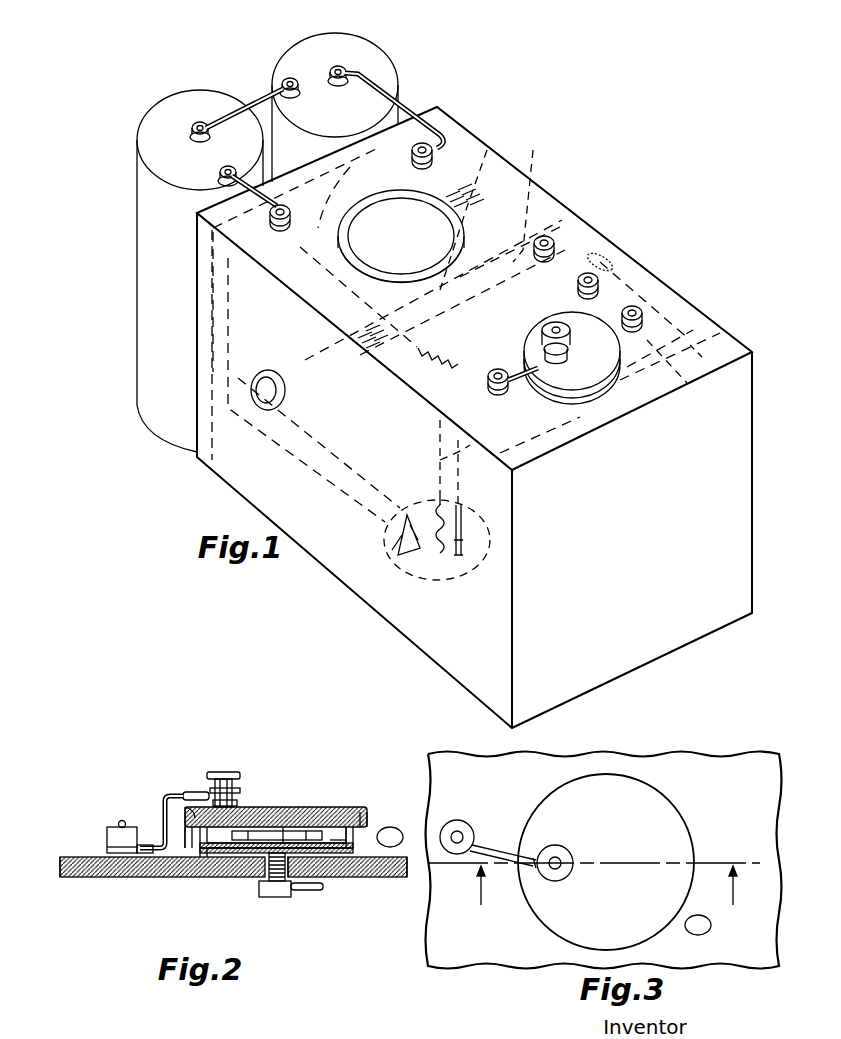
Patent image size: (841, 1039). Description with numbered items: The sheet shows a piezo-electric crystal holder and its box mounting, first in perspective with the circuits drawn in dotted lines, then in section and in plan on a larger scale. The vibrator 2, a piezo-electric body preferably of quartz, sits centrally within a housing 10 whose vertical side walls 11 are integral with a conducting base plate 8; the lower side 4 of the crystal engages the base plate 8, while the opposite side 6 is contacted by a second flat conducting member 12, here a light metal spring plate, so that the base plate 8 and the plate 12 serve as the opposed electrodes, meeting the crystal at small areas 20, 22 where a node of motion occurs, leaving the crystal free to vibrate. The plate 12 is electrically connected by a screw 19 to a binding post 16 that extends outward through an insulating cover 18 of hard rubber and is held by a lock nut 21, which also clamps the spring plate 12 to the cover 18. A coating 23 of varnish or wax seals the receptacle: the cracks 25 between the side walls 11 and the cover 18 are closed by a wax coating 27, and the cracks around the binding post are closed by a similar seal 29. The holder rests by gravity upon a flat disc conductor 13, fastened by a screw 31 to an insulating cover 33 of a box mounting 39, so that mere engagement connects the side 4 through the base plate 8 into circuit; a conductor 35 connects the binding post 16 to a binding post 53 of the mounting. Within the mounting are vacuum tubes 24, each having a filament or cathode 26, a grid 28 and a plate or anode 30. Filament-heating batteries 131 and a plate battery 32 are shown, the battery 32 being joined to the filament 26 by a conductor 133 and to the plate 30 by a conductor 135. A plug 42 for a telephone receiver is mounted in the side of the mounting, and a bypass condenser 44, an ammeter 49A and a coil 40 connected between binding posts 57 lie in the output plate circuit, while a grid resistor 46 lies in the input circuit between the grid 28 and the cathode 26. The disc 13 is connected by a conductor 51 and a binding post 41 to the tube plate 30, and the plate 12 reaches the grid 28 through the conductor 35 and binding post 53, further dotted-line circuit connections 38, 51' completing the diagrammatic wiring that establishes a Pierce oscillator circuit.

In FIG. 2, the piezo-electric body 2 is at (332, 845).
In FIG. 3, the piezo-electric body 2 is at (594, 898).
In FIG. 2, the side of crystal 4 is at (250, 815).
In FIG. 2, the opposite side of crystal 6 is at (365, 812).
In FIG. 2, the base plate 8 is at (362, 825).
In FIG. 2, the housing 10 is at (390, 837).
In FIG. 3, the housing 10 is at (698, 925).
In FIG. 2, the side walls 11 is at (122, 877).
In FIG. 2, the conducting member 12 is at (292, 832).
In FIG. 1, the flat disc conductor 13 is at (597, 390).
In FIG. 2, the flat disc conductor 13 is at (199, 847).
In FIG. 1, the binding post 16 is at (577, 330).
In FIG. 2, the binding post 16 is at (228, 797).
In FIG. 3, the binding post 16 is at (563, 848).
In FIG. 1, the insulating cover 18 is at (590, 375).
In FIG. 2, the insulating cover 18 is at (282, 835).
In FIG. 3, the insulating cover 18 is at (672, 830).
In FIG. 2, the screw 19 is at (192, 840).
In FIG. 2, the contact point 20 is at (272, 857).
In FIG. 2, the lock nut 21 is at (200, 810).
In FIG. 2, the contact point 22 is at (300, 840).
In FIG. 2, the coating 23 is at (330, 840).
In FIG. 1, the vacuum tubes 24 is at (450, 577).
In FIG. 2, the cracks 25 is at (350, 870).
In FIG. 1, the filament or cathode 26 is at (400, 568).
In FIG. 2, the coating 27 is at (190, 835).
In FIG. 1, the grid 28 is at (433, 557).
In FIG. 2, the seal 29 is at (238, 830).
In FIG. 1, the plate or anode 30 is at (472, 462).
In FIG. 2, the screw 31 is at (272, 897).
In FIG. 1, the plate battery 32 is at (470, 187).
In FIG. 2, the insulating cover 33 is at (390, 878).
In FIG. 3, the insulating cover 33 is at (675, 770).
In FIG. 1, the conductor 35 is at (525, 373).
In FIG. 2, the conductor 35 is at (162, 800).
In FIG. 3, the conductor 35 is at (500, 848).
In FIG. 1, the conductor 38 is at (690, 345).
In FIG. 1, the box mounting 39 is at (605, 657).
In FIG. 1, the coil 40 is at (607, 243).
In FIG. 1, the binding post 41 is at (640, 305).
In FIG. 1, the plug 42 is at (267, 400).
In FIG. 1, the bypass condenser 44 is at (375, 358).
In FIG. 1, the grid resistor 46 is at (432, 378).
In FIG. 1, the ammeter 49A is at (401, 236).
In FIG. 1, the conductor 51 is at (412, 462).
In FIG. 2, the conductor 51 is at (303, 914).
In FIG. 1, the conductor 51' is at (688, 380).
In FIG. 1, the binding post 53 is at (505, 387).
In FIG. 2, the binding post 53 is at (110, 832).
In FIG. 3, the binding post 53 is at (462, 822).
In FIG. 1, the binding posts 57 is at (590, 272).
In FIG. 1, the filament-heating batteries 131 is at (298, 57).
In FIG. 1, the conductor 133 is at (351, 187).
In FIG. 1, the conductor 135 is at (500, 253).